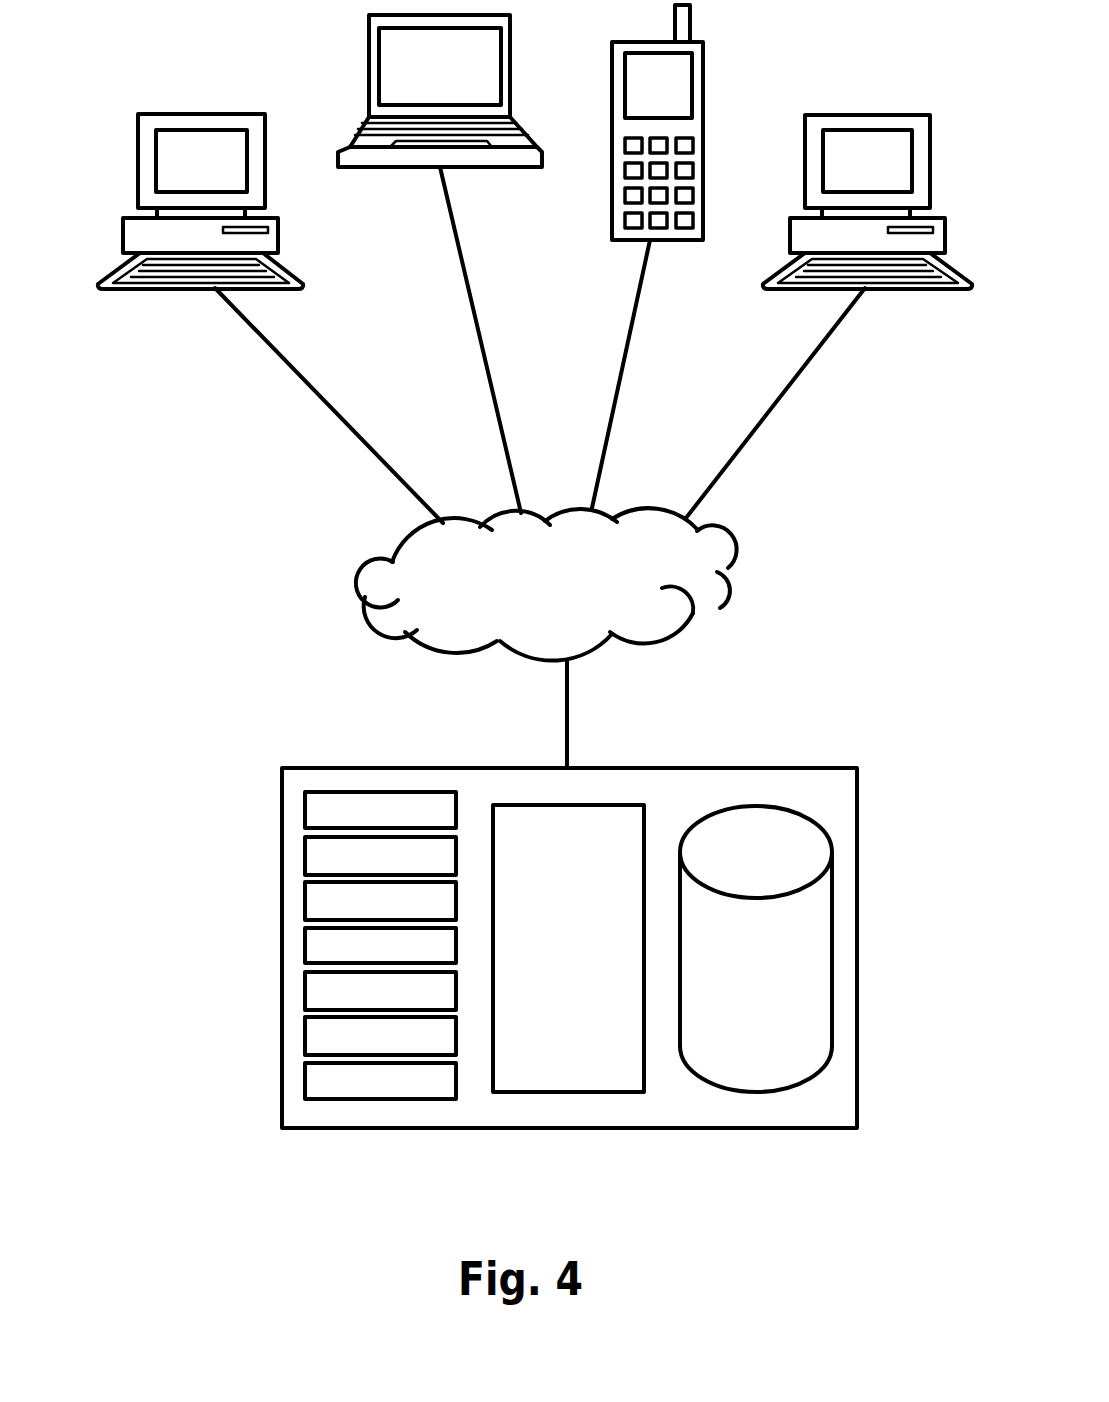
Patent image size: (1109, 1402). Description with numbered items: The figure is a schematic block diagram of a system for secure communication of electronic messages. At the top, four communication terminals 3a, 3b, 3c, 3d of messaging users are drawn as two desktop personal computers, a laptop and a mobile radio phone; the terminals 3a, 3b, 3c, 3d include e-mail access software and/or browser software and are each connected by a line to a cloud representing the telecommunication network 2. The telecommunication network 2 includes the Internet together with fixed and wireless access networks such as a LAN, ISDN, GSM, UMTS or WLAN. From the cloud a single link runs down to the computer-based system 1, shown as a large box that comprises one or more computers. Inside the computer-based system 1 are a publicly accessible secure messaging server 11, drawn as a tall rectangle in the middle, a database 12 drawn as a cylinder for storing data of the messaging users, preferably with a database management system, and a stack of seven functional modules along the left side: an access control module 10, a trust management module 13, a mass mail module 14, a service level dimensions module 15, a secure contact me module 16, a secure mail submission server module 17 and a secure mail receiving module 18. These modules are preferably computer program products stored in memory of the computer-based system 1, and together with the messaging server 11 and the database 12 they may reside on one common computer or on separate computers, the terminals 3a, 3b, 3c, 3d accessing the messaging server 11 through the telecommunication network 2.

The computer-based system 1 is at (668, 1102).
The telecommunication network 2 is at (380, 584).
The communication terminal 3a is at (137, 302).
The communication terminal 3b is at (410, 172).
The communication terminal 3c is at (603, 248).
The communication terminal 3d is at (885, 302).
The access control module 10 is at (318, 803).
The secure messaging server 11 is at (532, 1065).
The database 12 is at (793, 1065).
The trust management module 13 is at (318, 850).
The mass mail module 14 is at (318, 895).
The service level dimensions module 15 is at (318, 940).
The secure contact me module 16 is at (318, 985).
The secure mail submission server module 17 is at (318, 1030).
The secure mail receiving module 18 is at (318, 1075).